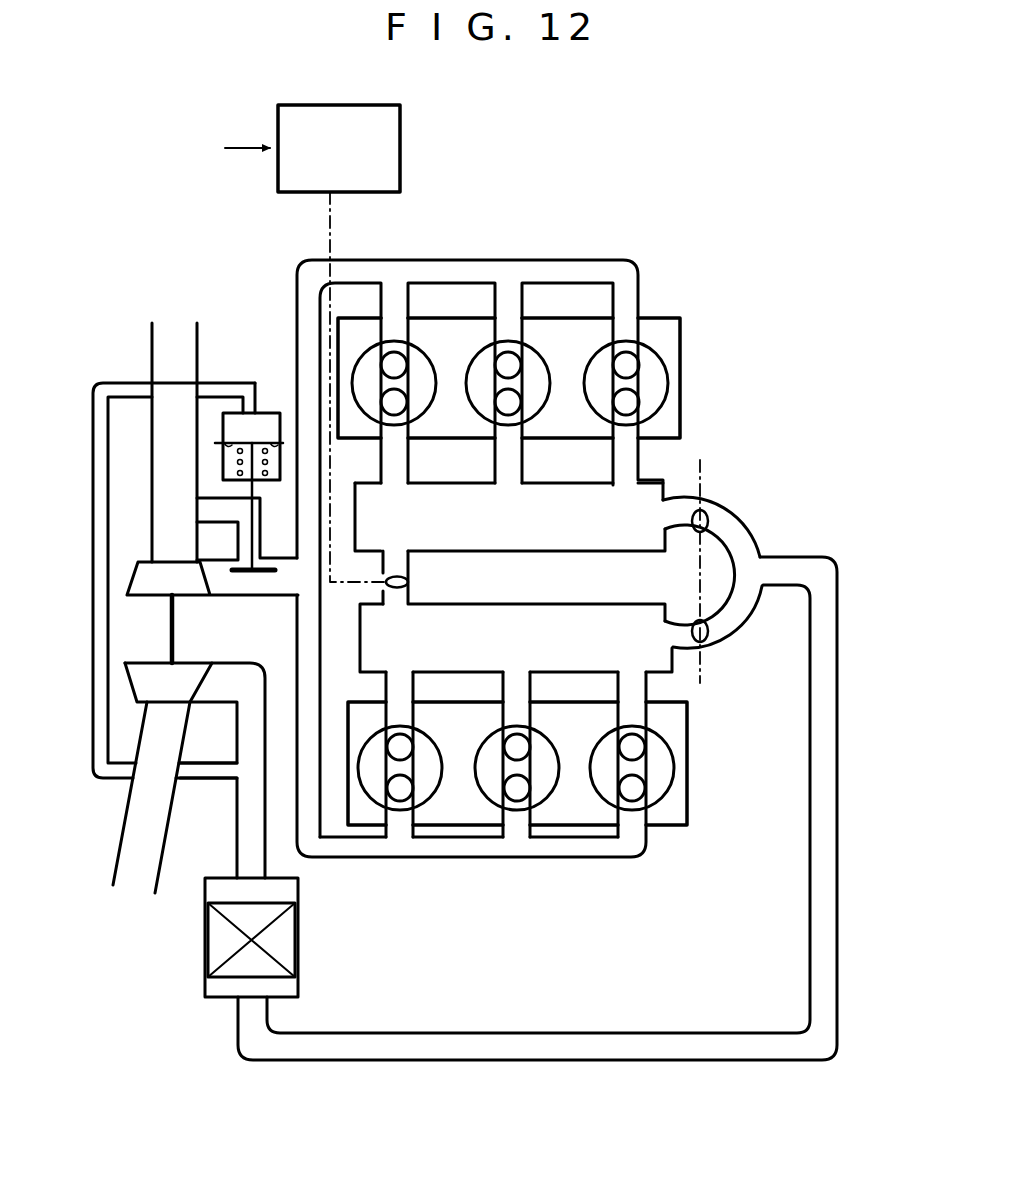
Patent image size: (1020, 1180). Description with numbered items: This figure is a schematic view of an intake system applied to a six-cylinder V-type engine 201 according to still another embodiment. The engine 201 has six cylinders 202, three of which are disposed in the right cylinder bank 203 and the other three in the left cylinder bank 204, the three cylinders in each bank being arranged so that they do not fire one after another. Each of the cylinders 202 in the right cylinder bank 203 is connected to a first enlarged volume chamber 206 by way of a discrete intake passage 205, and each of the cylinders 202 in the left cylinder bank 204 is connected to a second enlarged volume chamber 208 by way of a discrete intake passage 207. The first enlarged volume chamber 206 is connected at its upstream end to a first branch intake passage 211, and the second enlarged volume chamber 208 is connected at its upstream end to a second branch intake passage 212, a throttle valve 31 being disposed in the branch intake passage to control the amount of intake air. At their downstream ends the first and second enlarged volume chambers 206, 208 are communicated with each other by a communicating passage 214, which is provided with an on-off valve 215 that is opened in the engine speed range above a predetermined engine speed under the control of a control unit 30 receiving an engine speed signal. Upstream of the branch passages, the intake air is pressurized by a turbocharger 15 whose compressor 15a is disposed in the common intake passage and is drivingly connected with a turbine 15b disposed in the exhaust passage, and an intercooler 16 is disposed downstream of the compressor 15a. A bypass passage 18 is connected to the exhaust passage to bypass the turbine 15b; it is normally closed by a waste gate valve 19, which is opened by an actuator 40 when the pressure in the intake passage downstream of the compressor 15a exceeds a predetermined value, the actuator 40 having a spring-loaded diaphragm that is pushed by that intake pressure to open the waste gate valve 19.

The turbocharger 15 is at (171, 608).
The compressor 15a is at (195, 688).
The turbine 15b is at (188, 580).
The intercooler 16 is at (288, 943).
The bypass passage 18 is at (243, 533).
The waste gate valve 19 is at (262, 578).
The control unit 30 is at (400, 135).
The throttle valve 31 is at (697, 618).
The actuator 40 is at (272, 397).
The V-6 engine 201 is at (693, 432).
The cylinders 202 is at (436, 372).
The right cylinder bank 203 is at (665, 332).
The left cylinder bank 204 is at (686, 810).
The discrete intake passage 205 is at (403, 455).
The first enlarged volume chamber 206 is at (672, 482).
The discrete intake passage 207 is at (404, 692).
The second enlarged volume chamber 208 is at (515, 622).
The first branch intake passage 211 is at (740, 540).
The second branch intake passage 212 is at (735, 610).
The communicating passage 214 is at (403, 562).
The on-off valve 215 is at (410, 593).